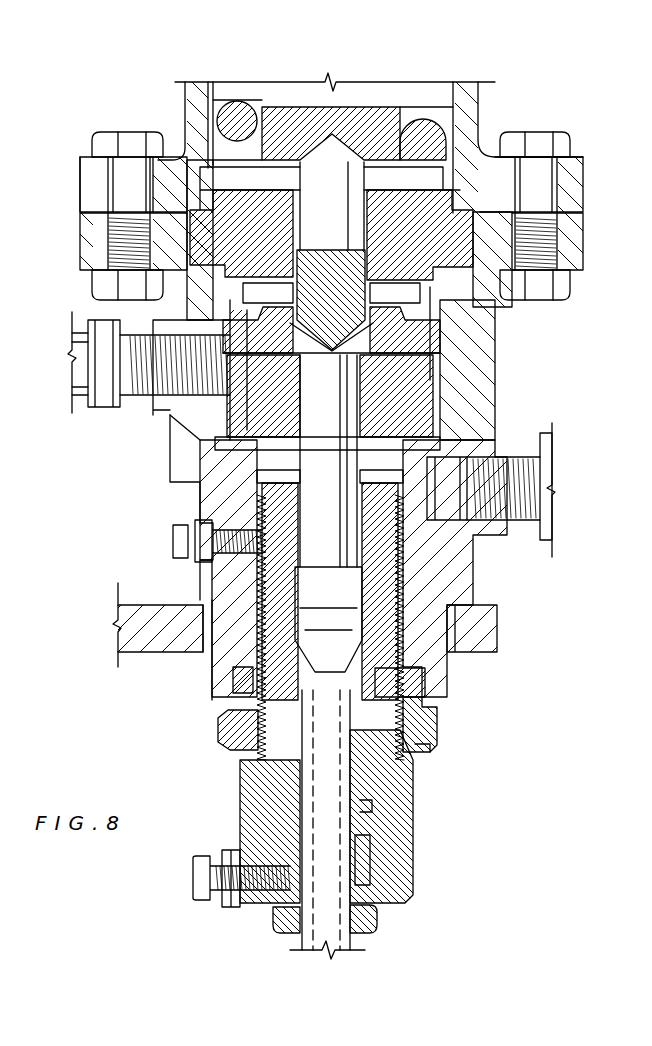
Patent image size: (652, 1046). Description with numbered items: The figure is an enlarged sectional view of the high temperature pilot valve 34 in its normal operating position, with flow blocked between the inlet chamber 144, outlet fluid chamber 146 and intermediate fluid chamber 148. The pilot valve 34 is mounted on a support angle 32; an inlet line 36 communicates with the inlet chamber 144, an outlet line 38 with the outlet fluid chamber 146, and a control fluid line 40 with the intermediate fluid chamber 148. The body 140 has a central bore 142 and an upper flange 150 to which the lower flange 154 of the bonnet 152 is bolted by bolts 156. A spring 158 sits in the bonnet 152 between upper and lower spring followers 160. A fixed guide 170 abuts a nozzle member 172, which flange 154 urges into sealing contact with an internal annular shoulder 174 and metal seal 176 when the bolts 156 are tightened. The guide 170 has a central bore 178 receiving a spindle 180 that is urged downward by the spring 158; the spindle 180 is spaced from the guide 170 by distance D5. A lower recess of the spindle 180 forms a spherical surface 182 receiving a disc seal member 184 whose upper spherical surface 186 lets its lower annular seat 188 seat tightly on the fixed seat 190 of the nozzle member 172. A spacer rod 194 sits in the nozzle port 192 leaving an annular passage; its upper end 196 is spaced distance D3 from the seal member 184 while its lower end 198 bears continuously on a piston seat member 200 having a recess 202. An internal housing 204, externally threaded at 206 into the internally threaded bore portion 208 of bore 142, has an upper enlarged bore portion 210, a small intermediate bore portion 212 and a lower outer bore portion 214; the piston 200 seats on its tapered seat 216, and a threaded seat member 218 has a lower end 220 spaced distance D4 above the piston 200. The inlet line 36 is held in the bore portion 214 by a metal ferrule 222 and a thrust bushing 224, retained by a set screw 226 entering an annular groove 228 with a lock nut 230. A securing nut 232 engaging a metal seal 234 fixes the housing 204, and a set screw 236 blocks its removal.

The support angle 32 is at (140, 640).
The pilot valve 34 is at (88, 508).
The inlet line 36 is at (350, 940).
The outlet line 38 is at (80, 380).
The control fluid line 40 is at (552, 494).
The body 140 is at (552, 442).
The central bore 142 is at (407, 572).
The inlet chamber 144 is at (397, 727).
The outlet fluid chamber 146 is at (227, 413).
The intermediate fluid chamber 148 is at (280, 443).
The upper flange 150 is at (100, 242).
The bonnet 152 is at (462, 100).
The lower flange 154 is at (90, 187).
The bolts 156 is at (118, 128).
The spring 158 is at (230, 112).
The spring followers 160 is at (233, 148).
The fixed guide 170 is at (457, 249).
The nozzle member 172 is at (440, 380).
The internal annular shoulder 174 is at (457, 433).
The metal seal 176 is at (228, 440).
The central bore 178 is at (348, 187).
The spindle 180 is at (458, 322).
The spherical surface 182 is at (306, 320).
The disc seal member 184 is at (445, 335).
The upper spherical surface 186 is at (487, 301).
The lower annular seat 188 is at (415, 357).
The fixed seat 190 is at (152, 392).
The nozzle port 192 is at (415, 399).
The spacer rod 194 is at (313, 507).
The upper end 196 is at (85, 352).
The lower end 198 is at (423, 670).
The piston seat member 200 is at (380, 663).
The recess 202 is at (293, 640).
The internal housing 204 is at (431, 812).
The external threads 206 is at (440, 640).
The internally threaded bore portion 208 is at (403, 630).
The upper enlarged bore portion 210 is at (300, 608).
The intermediate bore portion 212 is at (225, 712).
The lower outer bore portion 214 is at (367, 845).
The tapered seat 216 is at (235, 680).
The seat member 218 is at (262, 512).
The lower end 220 is at (272, 588).
The metal ferrule 222 is at (293, 775).
The thrust bushing 224 is at (273, 923).
The set screw 226 is at (193, 884).
The annular groove 228 is at (360, 880).
The lock nut 230 is at (223, 857).
The securing nut 232 is at (423, 750).
The metal seal 234 is at (378, 677).
The set screw 236 is at (175, 543).
The spacing D3 is at (330, 395).
The distance D4 is at (378, 658).
The spacing D5 is at (262, 303).